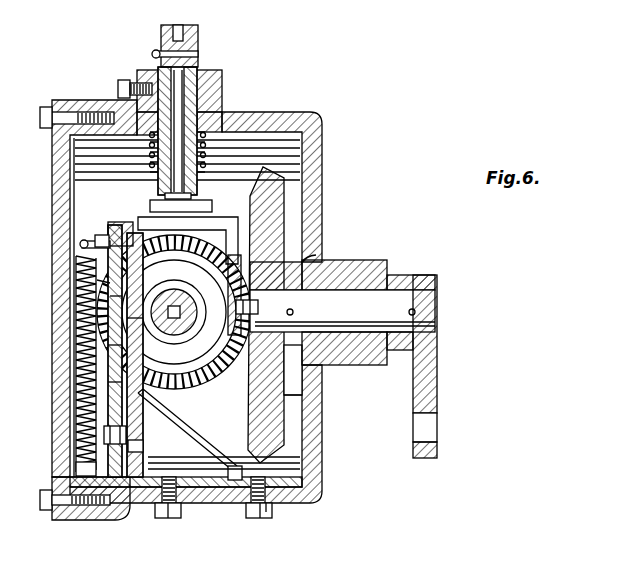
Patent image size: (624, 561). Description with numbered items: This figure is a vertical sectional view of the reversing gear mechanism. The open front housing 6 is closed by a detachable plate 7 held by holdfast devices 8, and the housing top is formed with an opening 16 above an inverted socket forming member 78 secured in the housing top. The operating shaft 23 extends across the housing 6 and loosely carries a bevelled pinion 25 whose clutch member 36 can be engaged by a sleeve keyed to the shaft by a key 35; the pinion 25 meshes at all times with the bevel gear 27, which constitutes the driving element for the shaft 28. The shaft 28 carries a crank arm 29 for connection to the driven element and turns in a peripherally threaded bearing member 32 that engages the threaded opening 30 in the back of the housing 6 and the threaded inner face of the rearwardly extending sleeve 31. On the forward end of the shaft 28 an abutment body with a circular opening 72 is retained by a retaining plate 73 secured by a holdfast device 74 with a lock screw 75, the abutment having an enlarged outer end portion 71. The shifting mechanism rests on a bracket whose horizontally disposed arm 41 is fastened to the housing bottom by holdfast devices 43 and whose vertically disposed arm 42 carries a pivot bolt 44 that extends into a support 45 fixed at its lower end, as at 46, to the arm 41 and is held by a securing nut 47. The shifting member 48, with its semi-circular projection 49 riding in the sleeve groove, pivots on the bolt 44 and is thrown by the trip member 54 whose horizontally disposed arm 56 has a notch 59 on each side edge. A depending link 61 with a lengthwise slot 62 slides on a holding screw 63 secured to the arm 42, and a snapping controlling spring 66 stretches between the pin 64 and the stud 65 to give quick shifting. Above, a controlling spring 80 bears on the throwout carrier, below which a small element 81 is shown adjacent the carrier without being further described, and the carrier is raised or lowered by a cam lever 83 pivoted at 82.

The housing 6 is at (322, 160).
The plate 7 is at (68, 370).
The holdfast devices 8 is at (55, 512).
The opening 16 is at (210, 90).
The operating shaft 23 is at (108, 345).
The bevelled pinion 25 is at (280, 420).
The bevel gear 27 is at (276, 400).
The shaft 28 is at (360, 304).
The crank arm 29 is at (437, 372).
The opening 30 is at (316, 272).
The sleeve 31 is at (366, 266).
The bearing member 32 is at (356, 350).
The key 35 is at (120, 235).
The clutch member 36 is at (268, 325).
The horizontally disposed arm 41 is at (190, 505).
The vertically disposed arm 42 is at (127, 318).
The holdfast devices 43 is at (262, 518).
The pivot bolt 44 is at (108, 382).
The support 45 is at (178, 428).
The securing point 46 is at (230, 466).
The securing nut 47 is at (150, 330).
The shifting member 48 is at (97, 280).
The semi-circular projection 49 is at (110, 296).
The trip member 54 is at (82, 244).
The horizontally disposed arm 56 is at (216, 230).
The notch 59 is at (138, 225).
The link 61 is at (125, 512).
The slot 62 is at (104, 436).
The holding screw 63 is at (143, 448).
The pin 64 is at (95, 238).
The stud 65 is at (76, 470).
The controlling spring 66 is at (76, 268).
The enlarged outer end portion 71 is at (224, 443).
The circular opening 72 is at (282, 262).
The retaining plate 73 is at (296, 383).
The holdfast device 74 is at (262, 306).
The lock screw 75 is at (190, 262).
The socket forming member 78 is at (137, 75).
The controlling spring 80 is at (205, 155).
The washer 81 is at (170, 212).
The pivot 82 is at (152, 54).
The cam lever 83 is at (160, 35).